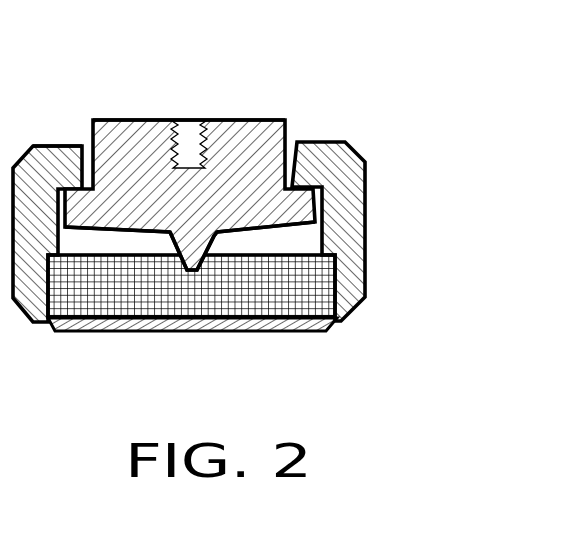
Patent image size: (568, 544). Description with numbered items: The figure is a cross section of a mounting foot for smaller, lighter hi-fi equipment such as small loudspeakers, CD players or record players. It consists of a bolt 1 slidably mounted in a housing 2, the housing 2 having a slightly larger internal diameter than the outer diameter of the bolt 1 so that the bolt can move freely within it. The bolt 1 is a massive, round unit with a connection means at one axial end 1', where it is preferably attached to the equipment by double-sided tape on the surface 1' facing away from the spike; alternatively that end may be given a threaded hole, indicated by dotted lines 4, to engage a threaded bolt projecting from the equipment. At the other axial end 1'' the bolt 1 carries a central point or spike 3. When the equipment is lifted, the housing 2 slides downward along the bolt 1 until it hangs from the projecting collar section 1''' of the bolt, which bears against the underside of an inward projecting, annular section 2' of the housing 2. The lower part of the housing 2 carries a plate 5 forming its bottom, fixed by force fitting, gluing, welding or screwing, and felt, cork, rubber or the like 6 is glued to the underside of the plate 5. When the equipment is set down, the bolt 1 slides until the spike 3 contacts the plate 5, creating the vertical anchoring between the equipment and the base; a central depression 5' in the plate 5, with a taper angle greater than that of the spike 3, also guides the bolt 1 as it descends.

The bolt 1 is at (213, 170).
The axial end of the bolt 1' is at (189, 73).
The other axial end of the bolt 1'' is at (94, 312).
The projecting collar section 1''' is at (307, 323).
The housing 2 is at (229, 232).
The inward projecting annular section 2' is at (56, 84).
The spike 3 is at (186, 272).
The threaded hole 4 is at (190, 153).
The plate 5 is at (191, 323).
The central depression 5' is at (191, 336).
The felt, cork or rubber layer 6 is at (100, 330).